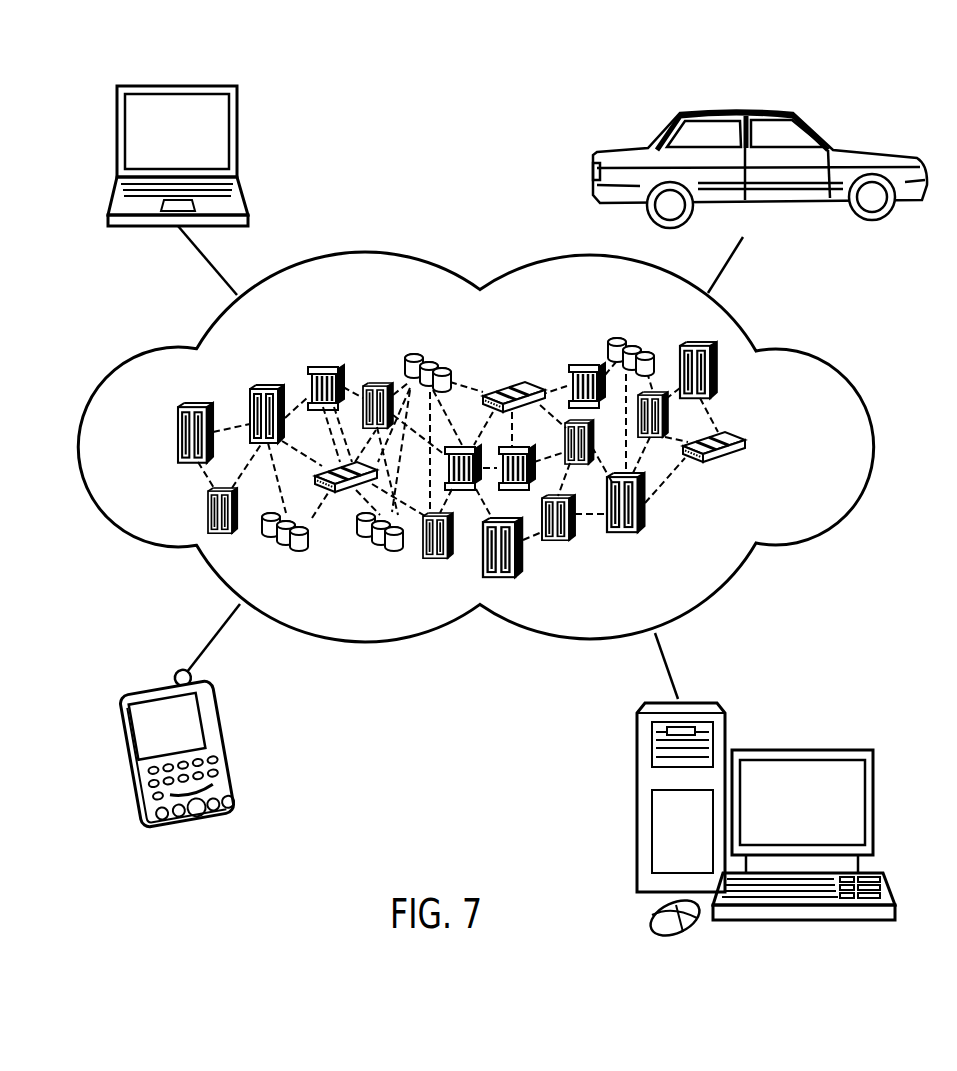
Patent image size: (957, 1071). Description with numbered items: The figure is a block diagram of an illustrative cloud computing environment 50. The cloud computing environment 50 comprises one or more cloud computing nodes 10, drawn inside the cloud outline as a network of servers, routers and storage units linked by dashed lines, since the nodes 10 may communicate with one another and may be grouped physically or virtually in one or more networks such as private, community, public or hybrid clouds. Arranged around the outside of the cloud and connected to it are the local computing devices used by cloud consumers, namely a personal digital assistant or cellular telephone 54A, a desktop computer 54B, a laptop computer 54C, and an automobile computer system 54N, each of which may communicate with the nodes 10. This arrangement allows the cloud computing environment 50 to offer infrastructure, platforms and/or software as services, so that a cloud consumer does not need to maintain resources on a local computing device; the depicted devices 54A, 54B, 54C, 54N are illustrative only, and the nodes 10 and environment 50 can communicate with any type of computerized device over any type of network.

The cloud computing node 10 is at (760, 449).
The cloud computing environment 50 is at (814, 355).
The personal digital assistant (PDA) or cellular telephone 54A is at (157, 688).
The desktop computer 54B is at (801, 750).
The laptop computer 54C is at (177, 85).
The automobile computer system 54N is at (738, 112).